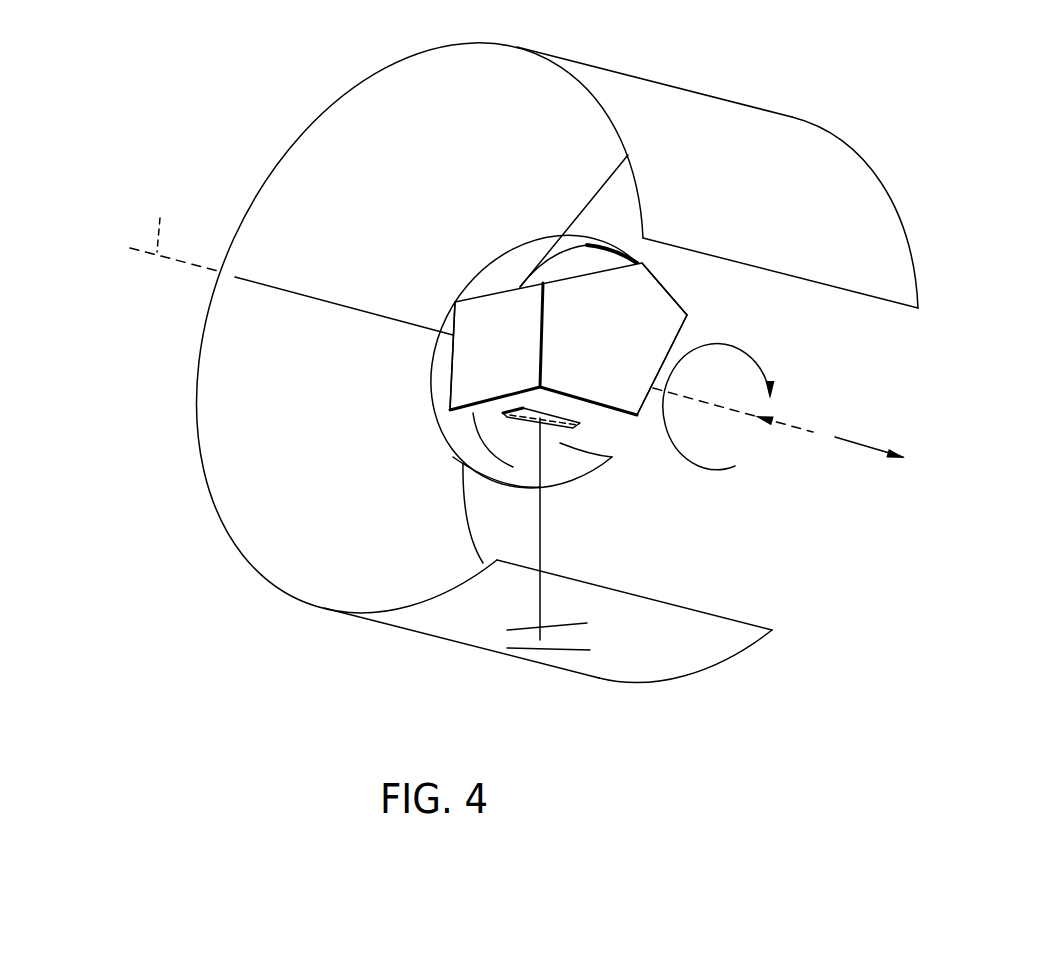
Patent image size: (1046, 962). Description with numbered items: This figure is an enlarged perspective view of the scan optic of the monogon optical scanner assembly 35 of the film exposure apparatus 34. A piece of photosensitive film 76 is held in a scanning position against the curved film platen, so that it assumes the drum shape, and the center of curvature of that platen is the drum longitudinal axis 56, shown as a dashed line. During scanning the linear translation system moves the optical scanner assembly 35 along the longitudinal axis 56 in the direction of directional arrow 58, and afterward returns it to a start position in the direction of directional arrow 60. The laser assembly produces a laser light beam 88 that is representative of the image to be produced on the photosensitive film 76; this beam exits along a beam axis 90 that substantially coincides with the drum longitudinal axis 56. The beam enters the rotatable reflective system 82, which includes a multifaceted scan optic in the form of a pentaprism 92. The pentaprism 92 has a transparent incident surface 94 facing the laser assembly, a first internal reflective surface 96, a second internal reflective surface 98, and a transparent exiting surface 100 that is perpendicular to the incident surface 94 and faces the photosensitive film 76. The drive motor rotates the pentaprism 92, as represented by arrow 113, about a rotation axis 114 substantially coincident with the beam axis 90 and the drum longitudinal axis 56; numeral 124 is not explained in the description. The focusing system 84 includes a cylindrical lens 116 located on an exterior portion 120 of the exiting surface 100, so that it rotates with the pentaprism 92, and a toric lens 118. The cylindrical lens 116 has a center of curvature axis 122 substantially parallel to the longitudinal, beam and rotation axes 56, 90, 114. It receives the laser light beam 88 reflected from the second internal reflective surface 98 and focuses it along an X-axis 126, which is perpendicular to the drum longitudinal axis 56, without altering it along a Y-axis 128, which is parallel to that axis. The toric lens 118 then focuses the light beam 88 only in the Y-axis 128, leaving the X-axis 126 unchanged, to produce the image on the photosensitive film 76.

The film exposure apparatus 34 is at (712, 72).
The optical scanner assembly 35 is at (690, 542).
The drum longitudinal axis 56 is at (128, 219).
The beam axis 90 is at (128, 219).
The rotation axis 114 is at (128, 219).
The axis 124 is at (128, 219).
The directional arrow 58 is at (798, 428).
The directional arrow 60 is at (860, 447).
The photosensitive film 76 is at (276, 565).
The rotatable reflective system 82 is at (672, 280).
The focusing system 84 is at (567, 485).
The laser light beam 88 is at (285, 287).
The pentaprism 92 is at (668, 316).
The incident surface 94 is at (453, 395).
The first internal reflective surface 96 is at (680, 331).
The second internal reflective surface 98 is at (560, 277).
The exiting surface 100 is at (447, 442).
The arrow 113 is at (735, 466).
The cylindrical lens 116 is at (530, 423).
The toric lens 118 is at (457, 453).
The exterior portion 120 is at (608, 415).
The center of curvature axis 122 is at (512, 398).
The X-axis 126 is at (522, 645).
The Y-axis 128 is at (577, 650).